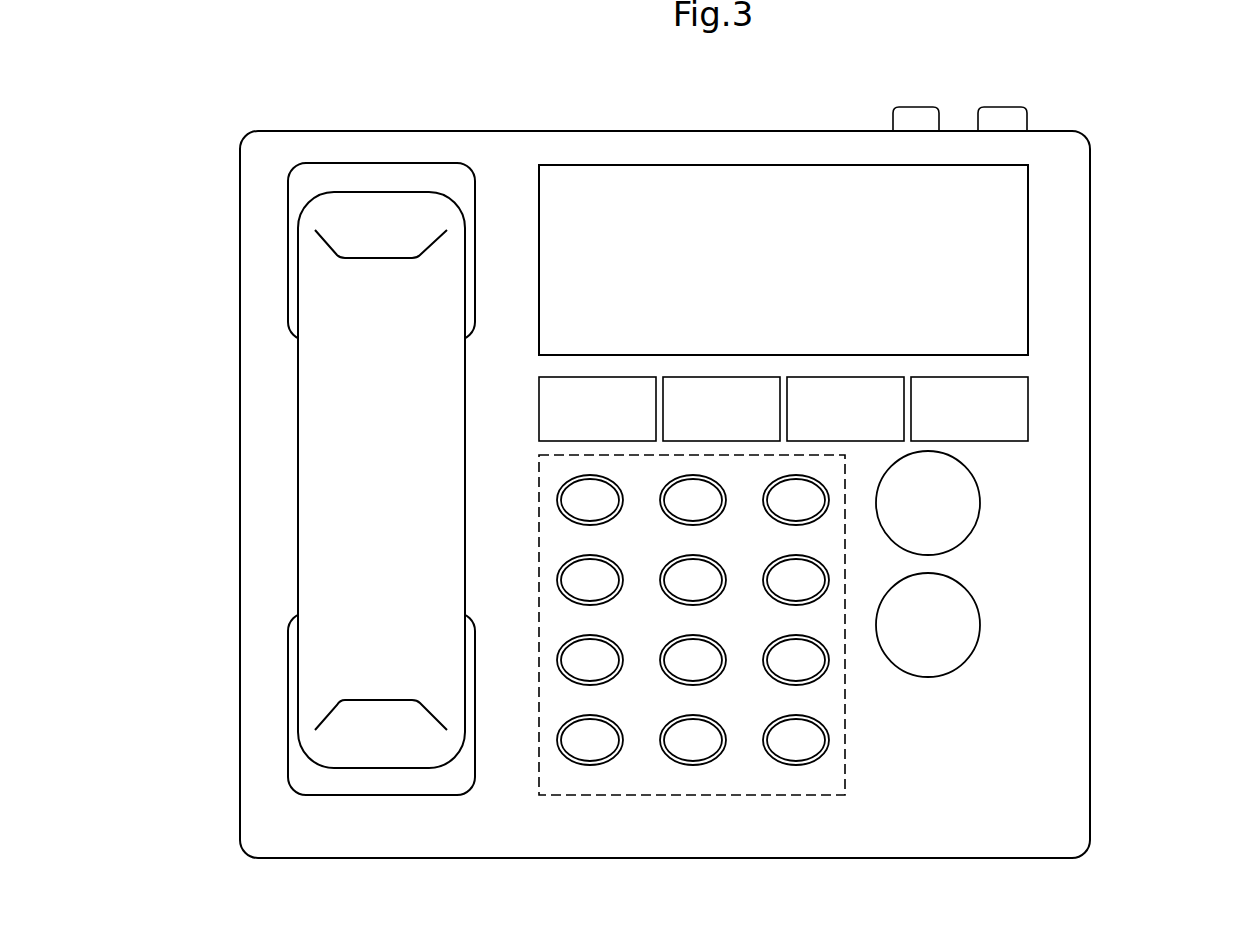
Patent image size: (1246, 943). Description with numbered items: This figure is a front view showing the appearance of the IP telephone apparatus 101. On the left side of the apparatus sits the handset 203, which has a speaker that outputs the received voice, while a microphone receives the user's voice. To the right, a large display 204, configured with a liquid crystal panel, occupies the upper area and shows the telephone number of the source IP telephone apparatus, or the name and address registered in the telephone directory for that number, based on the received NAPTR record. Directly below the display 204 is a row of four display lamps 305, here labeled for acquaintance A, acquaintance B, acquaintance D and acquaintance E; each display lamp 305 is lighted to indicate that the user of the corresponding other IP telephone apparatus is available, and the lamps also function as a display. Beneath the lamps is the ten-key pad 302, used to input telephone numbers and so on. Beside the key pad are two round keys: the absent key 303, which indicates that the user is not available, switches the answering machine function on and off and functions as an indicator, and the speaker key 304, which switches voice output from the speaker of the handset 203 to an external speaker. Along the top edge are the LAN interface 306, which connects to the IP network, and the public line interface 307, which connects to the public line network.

The IP telephone apparatus 101 is at (407, 106).
The handset 203 is at (307, 385).
The display 204 is at (1028, 248).
The ten-key pad 302 is at (829, 738).
The absent key 303 is at (978, 492).
The speaker key 304 is at (973, 597).
The display lamp 305 is at (1028, 418).
The LAN interface 306 is at (1003, 107).
The public line interface 307 is at (917, 107).